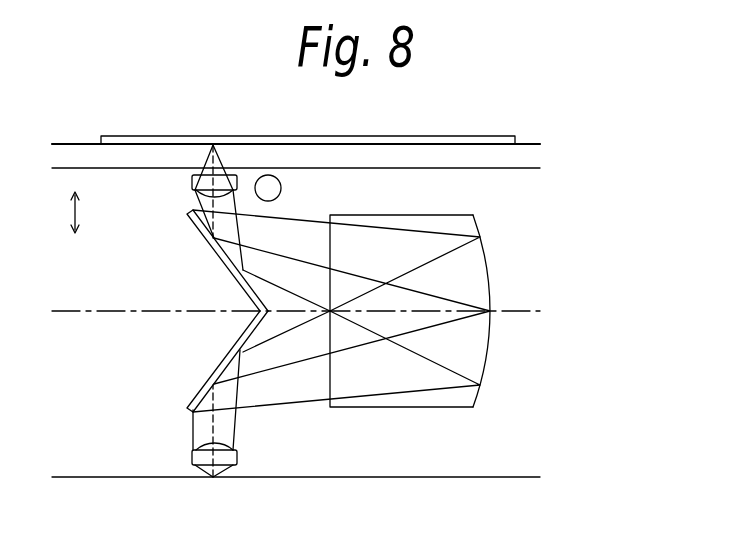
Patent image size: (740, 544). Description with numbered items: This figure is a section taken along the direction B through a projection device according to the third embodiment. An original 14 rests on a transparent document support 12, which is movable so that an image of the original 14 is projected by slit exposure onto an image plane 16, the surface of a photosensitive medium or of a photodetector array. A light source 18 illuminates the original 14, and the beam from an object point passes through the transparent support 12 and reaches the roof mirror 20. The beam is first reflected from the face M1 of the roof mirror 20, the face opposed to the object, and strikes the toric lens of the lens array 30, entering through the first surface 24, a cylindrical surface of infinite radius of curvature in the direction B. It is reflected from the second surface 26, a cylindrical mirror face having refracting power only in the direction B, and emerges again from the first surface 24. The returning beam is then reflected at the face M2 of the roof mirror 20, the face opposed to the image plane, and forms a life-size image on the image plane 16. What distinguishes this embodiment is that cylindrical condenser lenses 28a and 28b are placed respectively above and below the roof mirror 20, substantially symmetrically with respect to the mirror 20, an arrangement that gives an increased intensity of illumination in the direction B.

The transparent document support 12 is at (502, 170).
The original 14 is at (505, 137).
The image plane 16 is at (448, 477).
The light source 18 is at (281, 190).
The roof mirror 20 is at (234, 311).
The first surface 24 is at (328, 243).
The second surface 26 is at (486, 260).
The cylindrical condenser lens 28a is at (191, 186).
The cylindrical condenser lens 28b is at (192, 456).
The lens array 30 is at (423, 311).
The face opposed to the object M1 is at (231, 260).
The face opposed to the image plane M2 is at (255, 328).
The direction B is at (62, 212).